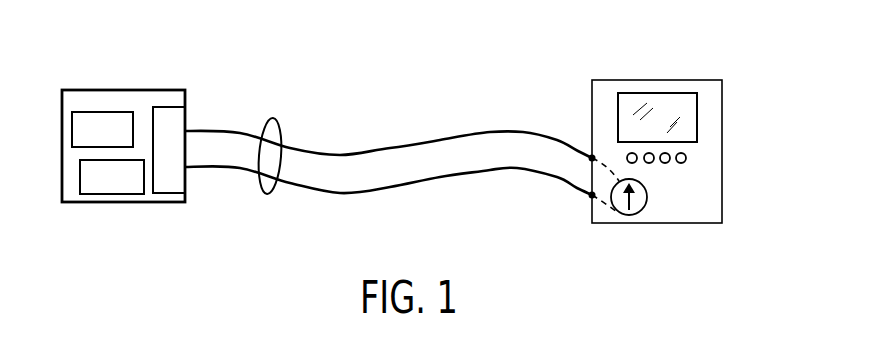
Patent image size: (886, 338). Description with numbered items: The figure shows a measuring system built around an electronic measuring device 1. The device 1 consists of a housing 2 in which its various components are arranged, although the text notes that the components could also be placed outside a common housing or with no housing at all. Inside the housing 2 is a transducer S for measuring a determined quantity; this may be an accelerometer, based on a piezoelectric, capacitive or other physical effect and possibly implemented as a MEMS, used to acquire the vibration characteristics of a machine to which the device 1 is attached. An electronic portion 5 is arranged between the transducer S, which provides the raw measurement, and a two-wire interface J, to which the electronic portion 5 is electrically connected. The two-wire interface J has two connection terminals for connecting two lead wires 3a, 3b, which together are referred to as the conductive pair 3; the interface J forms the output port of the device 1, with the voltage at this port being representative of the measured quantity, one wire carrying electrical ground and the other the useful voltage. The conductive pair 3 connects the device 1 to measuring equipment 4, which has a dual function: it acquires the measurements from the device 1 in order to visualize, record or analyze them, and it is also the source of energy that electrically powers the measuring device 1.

The electronic measuring device 1 is at (159, 240).
The housing 2 is at (133, 90).
The conductive pair 3 is at (275, 118).
The lead wire 3a is at (408, 143).
The lead wire 3b is at (487, 172).
The measuring equipment 4 is at (764, 149).
The electronic portion 5 is at (132, 188).
The two-wire interface J is at (186, 105).
The transducer S is at (75, 144).